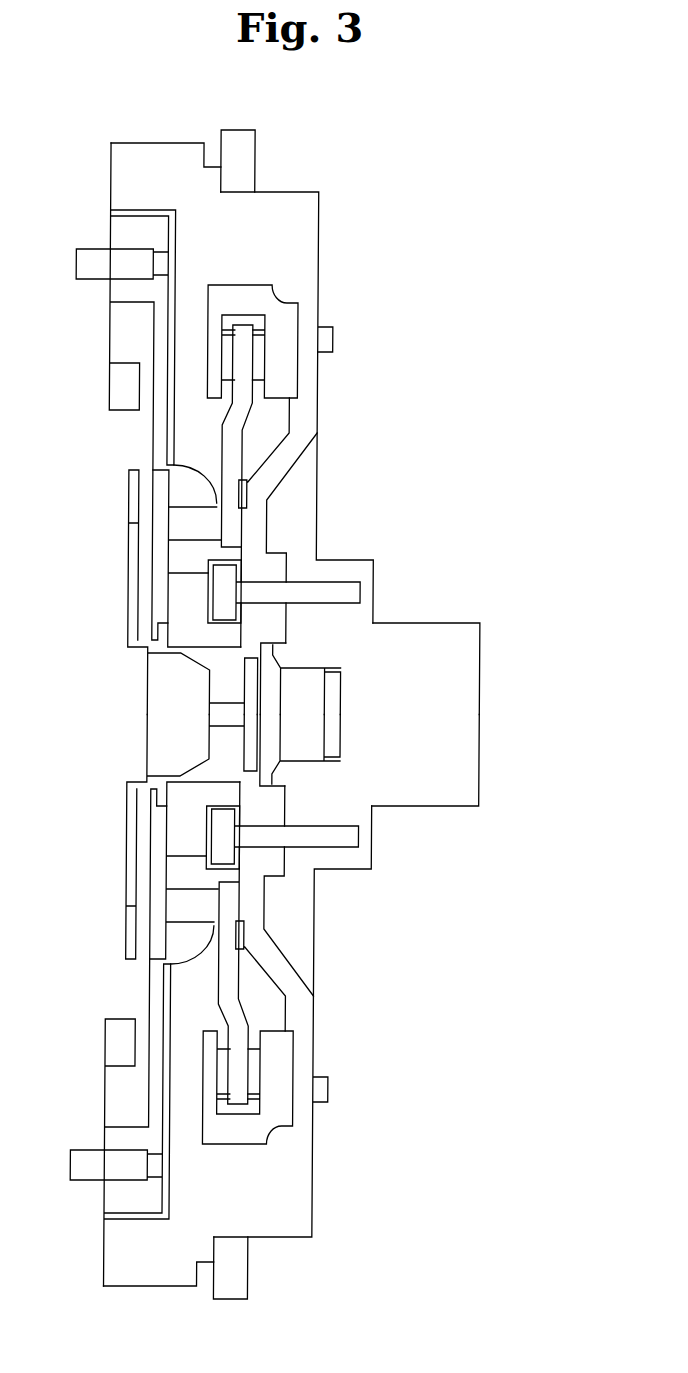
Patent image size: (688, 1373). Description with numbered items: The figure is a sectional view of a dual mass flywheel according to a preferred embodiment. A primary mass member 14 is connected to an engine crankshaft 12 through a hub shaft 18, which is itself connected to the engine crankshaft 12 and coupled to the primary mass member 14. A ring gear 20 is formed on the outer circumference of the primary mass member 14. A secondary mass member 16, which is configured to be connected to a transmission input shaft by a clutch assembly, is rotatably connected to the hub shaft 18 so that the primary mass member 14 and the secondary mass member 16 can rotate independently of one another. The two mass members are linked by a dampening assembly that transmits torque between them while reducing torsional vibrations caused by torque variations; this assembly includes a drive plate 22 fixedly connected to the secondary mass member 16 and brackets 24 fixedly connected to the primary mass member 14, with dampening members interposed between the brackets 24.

The engine crankshaft 12 is at (467, 755).
The primary mass member 14 is at (305, 1170).
The secondary mass member 16 is at (155, 1087).
The hub shaft 18 is at (218, 740).
The ring gear 20 is at (240, 1267).
The drive plate 22 is at (222, 982).
The brackets 24 is at (283, 1055).